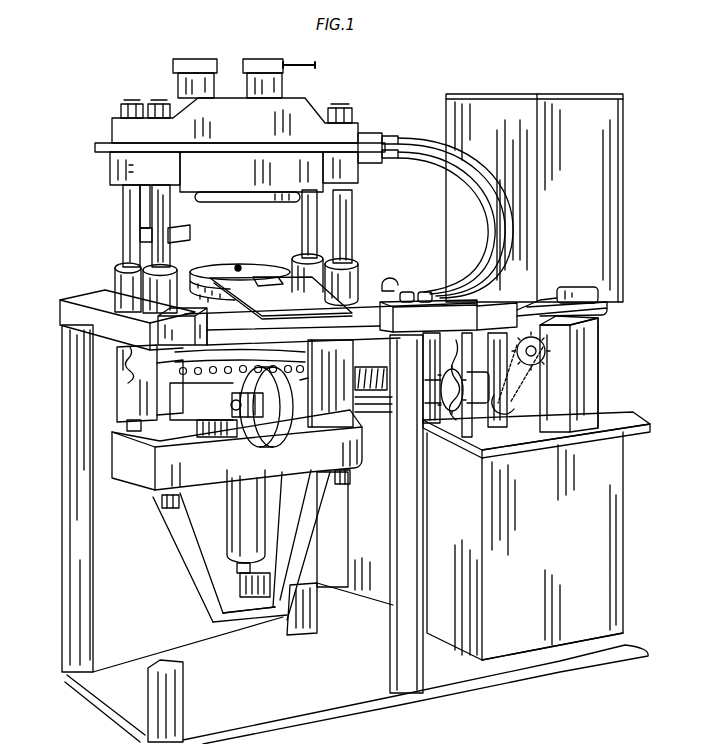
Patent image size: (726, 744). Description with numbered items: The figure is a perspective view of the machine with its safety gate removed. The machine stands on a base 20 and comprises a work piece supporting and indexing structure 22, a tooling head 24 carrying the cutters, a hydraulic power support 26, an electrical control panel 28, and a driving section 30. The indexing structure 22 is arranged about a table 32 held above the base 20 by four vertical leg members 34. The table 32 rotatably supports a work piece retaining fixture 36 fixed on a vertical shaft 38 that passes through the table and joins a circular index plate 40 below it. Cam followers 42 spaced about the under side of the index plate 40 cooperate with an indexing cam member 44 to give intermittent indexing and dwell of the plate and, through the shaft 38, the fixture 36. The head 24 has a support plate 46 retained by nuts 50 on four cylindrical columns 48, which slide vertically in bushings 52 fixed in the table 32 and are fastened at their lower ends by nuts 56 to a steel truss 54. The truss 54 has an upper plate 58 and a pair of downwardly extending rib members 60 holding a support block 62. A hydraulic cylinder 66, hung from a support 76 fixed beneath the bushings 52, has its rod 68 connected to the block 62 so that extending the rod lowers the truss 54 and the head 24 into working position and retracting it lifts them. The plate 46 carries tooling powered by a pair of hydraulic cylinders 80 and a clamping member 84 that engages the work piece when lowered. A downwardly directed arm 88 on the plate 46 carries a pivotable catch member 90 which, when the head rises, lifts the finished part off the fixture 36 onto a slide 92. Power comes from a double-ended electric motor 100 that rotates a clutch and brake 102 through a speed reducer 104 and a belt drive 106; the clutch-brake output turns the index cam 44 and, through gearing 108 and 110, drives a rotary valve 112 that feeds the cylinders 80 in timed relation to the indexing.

The base 20 is at (360, 712).
The work piece supporting and indexing structure 22 is at (113, 279).
The tooling head 24 is at (322, 97).
The hydraulic power support 26 is at (630, 522).
The electrical control panel 28 is at (630, 232).
The driving section 30 is at (608, 362).
The table 32 is at (62, 322).
The vertical leg members 34 is at (65, 636).
The work piece retaining fixture 36 is at (232, 266).
The vertical shaft 38 is at (245, 266).
The circular index plate 40 is at (326, 329).
The cam followers 42 is at (192, 369).
The indexing cam member 44 is at (278, 440).
The support plate 46 is at (104, 143).
The cylindrical columns 48 is at (312, 218).
The nuts 50 is at (157, 103).
The bushings 52 is at (115, 283).
The steel truss 54 is at (323, 517).
The nuts 56 is at (133, 498).
The upper plate 58 is at (232, 466).
The rib members 60 is at (178, 599).
The support block 62 is at (240, 603).
The hydraulic cylinder 66 is at (250, 511).
The rod 68 is at (243, 564).
The support 76 is at (216, 408).
The hydraulic cylinders 80 is at (198, 63).
The clamping member 84 is at (247, 202).
The arm 88 is at (120, 185).
The catch member 90 is at (183, 235).
The slide 92 is at (300, 305).
The double-ended electric motor 100 is at (546, 300).
The clutch and brake 102 is at (490, 455).
The speed reducer 104 is at (602, 388).
The belt drive 106 is at (372, 414).
The gearing 108 is at (526, 314).
The gearing 110 is at (428, 316).
The rotary valve 112 is at (372, 367).